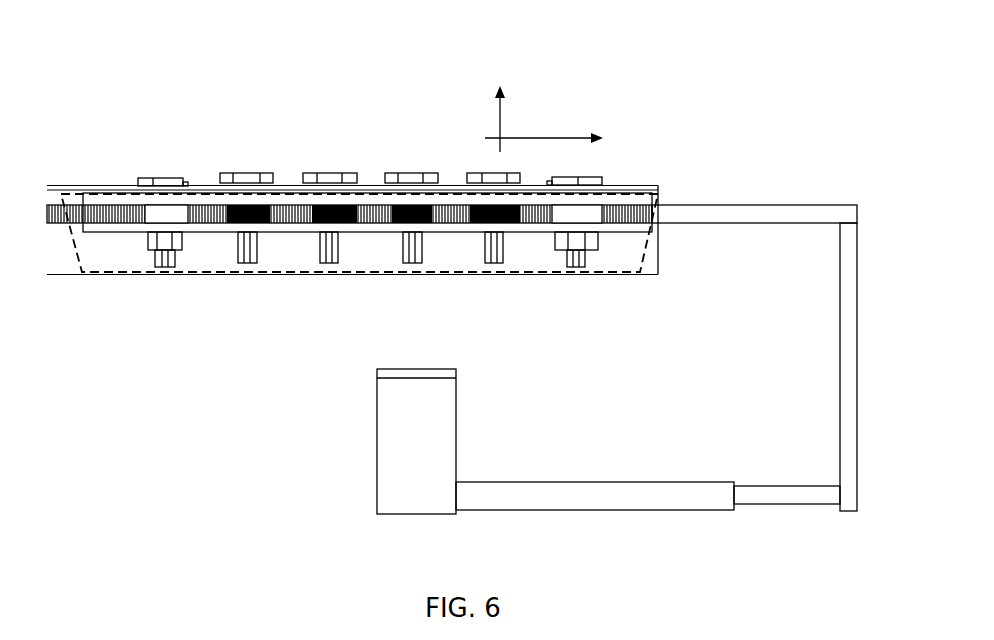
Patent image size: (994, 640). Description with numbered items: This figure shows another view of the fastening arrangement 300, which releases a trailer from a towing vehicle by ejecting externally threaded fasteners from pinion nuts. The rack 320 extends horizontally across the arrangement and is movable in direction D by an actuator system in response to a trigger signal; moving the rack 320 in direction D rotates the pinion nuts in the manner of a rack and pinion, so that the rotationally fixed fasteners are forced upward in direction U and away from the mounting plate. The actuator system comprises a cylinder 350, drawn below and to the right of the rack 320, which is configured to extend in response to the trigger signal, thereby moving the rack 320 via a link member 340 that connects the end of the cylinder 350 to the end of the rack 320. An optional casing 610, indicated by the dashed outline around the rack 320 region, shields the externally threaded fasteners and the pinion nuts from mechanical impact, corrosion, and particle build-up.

The fastening arrangement 300 is at (135, 72).
The rack 320 is at (717, 218).
The link member 340 is at (847, 362).
The cylinder 350 is at (560, 500).
The casing 610 is at (92, 273).